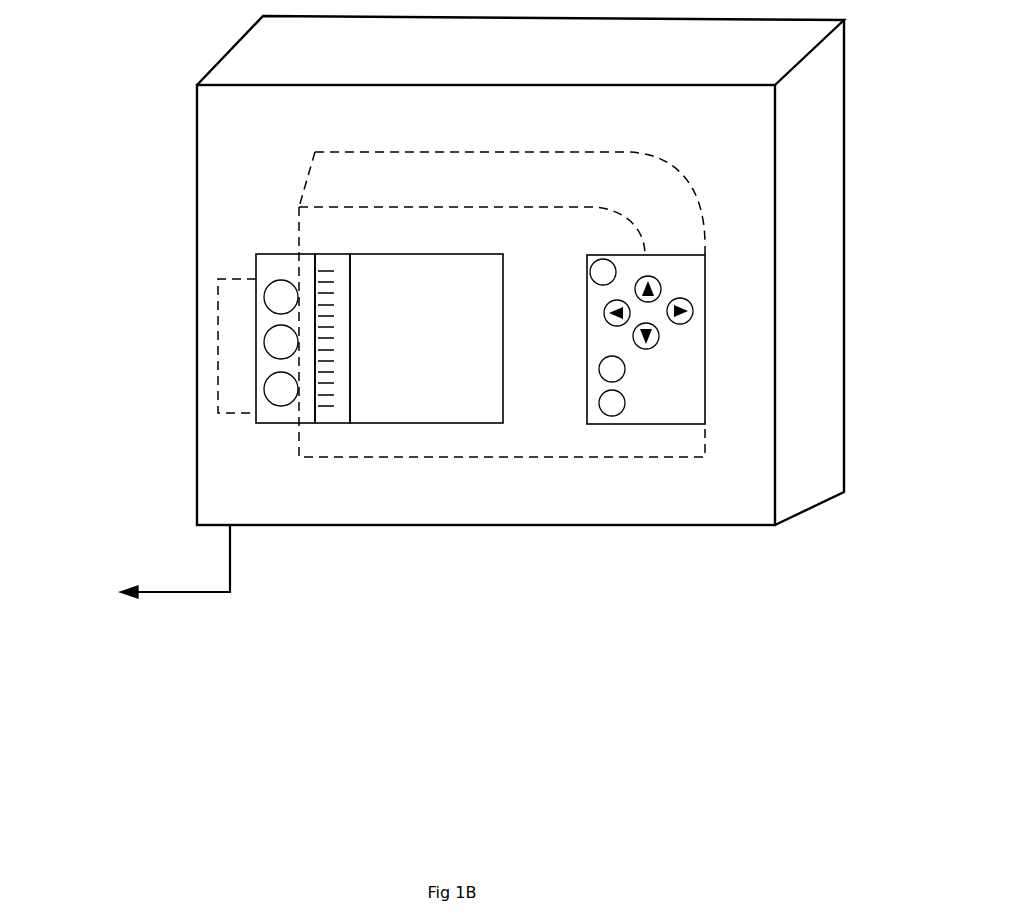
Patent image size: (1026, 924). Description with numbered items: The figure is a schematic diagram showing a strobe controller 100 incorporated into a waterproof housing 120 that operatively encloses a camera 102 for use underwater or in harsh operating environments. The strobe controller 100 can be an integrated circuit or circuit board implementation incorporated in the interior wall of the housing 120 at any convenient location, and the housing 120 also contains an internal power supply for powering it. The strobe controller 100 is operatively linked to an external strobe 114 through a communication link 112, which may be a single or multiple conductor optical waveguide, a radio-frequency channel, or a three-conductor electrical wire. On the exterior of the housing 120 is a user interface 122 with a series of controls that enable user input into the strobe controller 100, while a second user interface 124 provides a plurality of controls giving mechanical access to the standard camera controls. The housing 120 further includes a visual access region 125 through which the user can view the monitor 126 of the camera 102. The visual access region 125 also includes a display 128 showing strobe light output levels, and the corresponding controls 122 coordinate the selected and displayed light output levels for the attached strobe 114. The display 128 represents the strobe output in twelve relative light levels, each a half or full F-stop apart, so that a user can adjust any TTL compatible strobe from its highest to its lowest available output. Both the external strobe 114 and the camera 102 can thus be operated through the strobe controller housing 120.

The strobe controller 100 is at (237, 346).
The camera 102 is at (426, 323).
The communication link 112 is at (230, 565).
The strobe 114 is at (97, 584).
The waterproof housing 120 is at (516, 568).
The user interface 122 is at (273, 253).
The second user interface 124 is at (705, 392).
The visual access region 125 is at (400, 253).
The monitor 126 is at (418, 319).
The display 128 is at (333, 423).